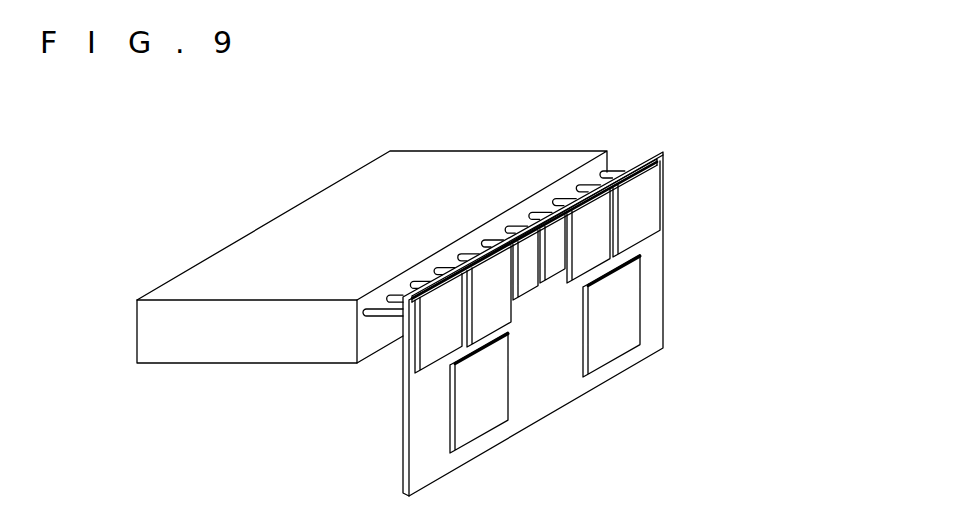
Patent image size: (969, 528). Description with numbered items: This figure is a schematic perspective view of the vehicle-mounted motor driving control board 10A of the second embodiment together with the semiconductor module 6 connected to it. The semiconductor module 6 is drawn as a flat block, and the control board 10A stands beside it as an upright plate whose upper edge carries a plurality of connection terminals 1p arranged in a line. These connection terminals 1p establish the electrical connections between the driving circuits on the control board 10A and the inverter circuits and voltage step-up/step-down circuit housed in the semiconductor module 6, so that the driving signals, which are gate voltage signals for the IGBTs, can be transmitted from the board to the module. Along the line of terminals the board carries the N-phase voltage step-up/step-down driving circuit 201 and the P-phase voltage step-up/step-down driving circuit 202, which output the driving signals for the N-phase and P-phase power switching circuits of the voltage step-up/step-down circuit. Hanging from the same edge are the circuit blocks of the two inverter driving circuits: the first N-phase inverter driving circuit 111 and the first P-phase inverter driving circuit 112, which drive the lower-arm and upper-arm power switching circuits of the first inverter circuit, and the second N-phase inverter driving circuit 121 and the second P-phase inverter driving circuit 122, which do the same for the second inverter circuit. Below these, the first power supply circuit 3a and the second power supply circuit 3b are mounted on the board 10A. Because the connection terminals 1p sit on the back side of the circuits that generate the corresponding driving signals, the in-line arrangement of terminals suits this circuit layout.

The semiconductor module 6 is at (136, 329).
The vehicle-mounted motor driving control board 10A is at (672, 188).
The connection terminals 1p is at (590, 183).
The N-phase voltage step-up/step-down driving circuit 201 is at (524, 229).
The P-phase voltage step-up/step-down driving circuit 202 is at (553, 212).
The first N-phase inverter driving circuit 111 is at (438, 364).
The first P-phase inverter driving circuit 112 is at (487, 340).
The second N-phase inverter driving circuit 121 is at (640, 247).
The second P-phase inverter driving circuit 122 is at (599, 276).
The first power supply circuit 3a is at (510, 378).
The second power supply circuit 3b is at (643, 302).